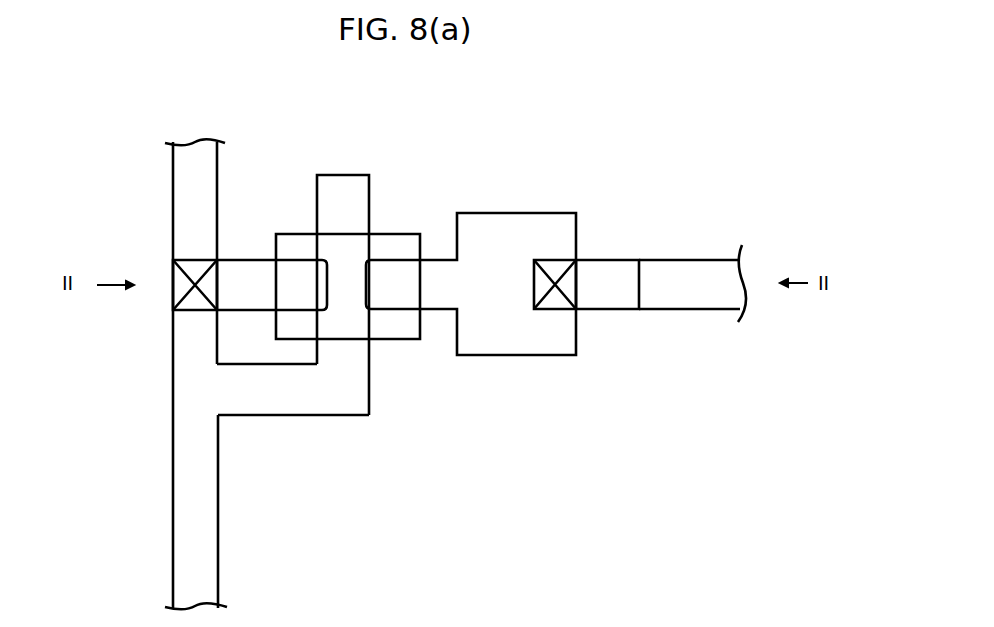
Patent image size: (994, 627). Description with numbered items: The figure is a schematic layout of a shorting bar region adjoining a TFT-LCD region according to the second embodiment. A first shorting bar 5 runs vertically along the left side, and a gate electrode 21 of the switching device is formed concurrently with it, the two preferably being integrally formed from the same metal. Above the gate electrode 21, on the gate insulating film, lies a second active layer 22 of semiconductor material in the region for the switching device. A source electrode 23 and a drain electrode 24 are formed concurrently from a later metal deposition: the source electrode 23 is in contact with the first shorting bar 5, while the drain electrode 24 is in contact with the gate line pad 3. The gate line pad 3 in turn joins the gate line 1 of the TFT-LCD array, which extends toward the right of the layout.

The gate line 1 is at (684, 277).
The gate line pad 3 is at (600, 277).
The first shorting bar 5 is at (190, 521).
The gate electrode 21 is at (350, 190).
The second active layer 22 is at (402, 323).
The source electrode 23 is at (258, 262).
The drain electrode 24 is at (519, 333).